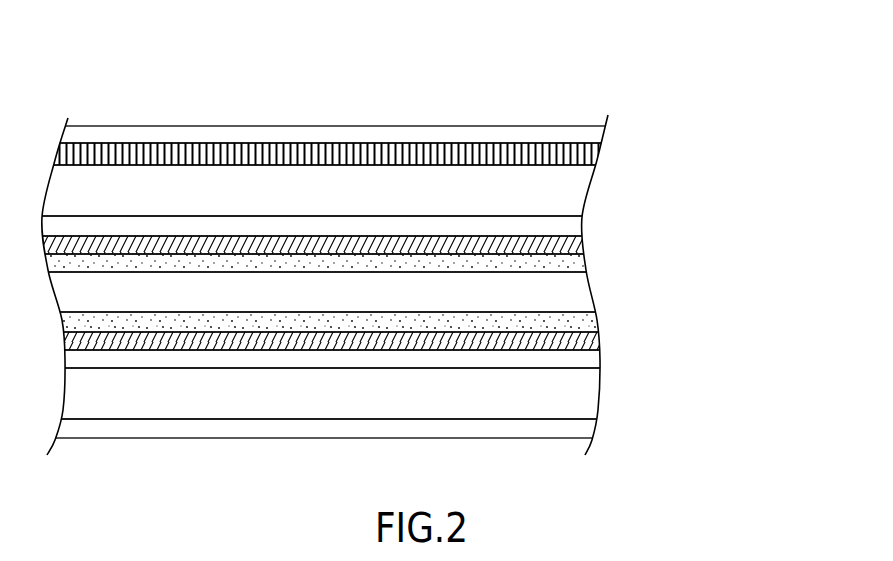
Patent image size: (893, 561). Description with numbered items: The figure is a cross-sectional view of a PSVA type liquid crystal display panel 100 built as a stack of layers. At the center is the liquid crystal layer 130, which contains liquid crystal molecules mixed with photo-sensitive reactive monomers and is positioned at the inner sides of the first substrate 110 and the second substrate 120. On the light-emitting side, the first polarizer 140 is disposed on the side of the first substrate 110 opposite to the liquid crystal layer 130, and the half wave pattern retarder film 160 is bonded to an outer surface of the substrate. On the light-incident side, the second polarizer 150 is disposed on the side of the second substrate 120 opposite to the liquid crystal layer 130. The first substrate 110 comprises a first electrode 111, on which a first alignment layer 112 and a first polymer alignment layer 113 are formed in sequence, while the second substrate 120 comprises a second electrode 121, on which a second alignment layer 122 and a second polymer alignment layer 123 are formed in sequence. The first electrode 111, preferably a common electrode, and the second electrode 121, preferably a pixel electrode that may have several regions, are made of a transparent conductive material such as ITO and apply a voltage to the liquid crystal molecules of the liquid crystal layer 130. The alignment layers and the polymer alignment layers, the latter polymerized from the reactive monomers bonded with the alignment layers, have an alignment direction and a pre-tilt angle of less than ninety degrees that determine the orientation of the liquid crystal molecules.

The liquid crystal display panel 100 is at (720, 139).
The first substrate 110 is at (573, 183).
The first electrode 111 is at (573, 222).
The first alignment layer 112 is at (572, 240).
The first polymer alignment layer 113 is at (580, 258).
The second substrate 120 is at (593, 396).
The second electrode 121 is at (593, 362).
The second alignment layer 122 is at (595, 340).
The second polymer alignment layer 123 is at (597, 316).
The liquid crystal layer 130 is at (582, 284).
The first polarizer 140 is at (547, 136).
The second polarizer 150 is at (582, 432).
The half wave pattern retarder film 160 is at (595, 148).